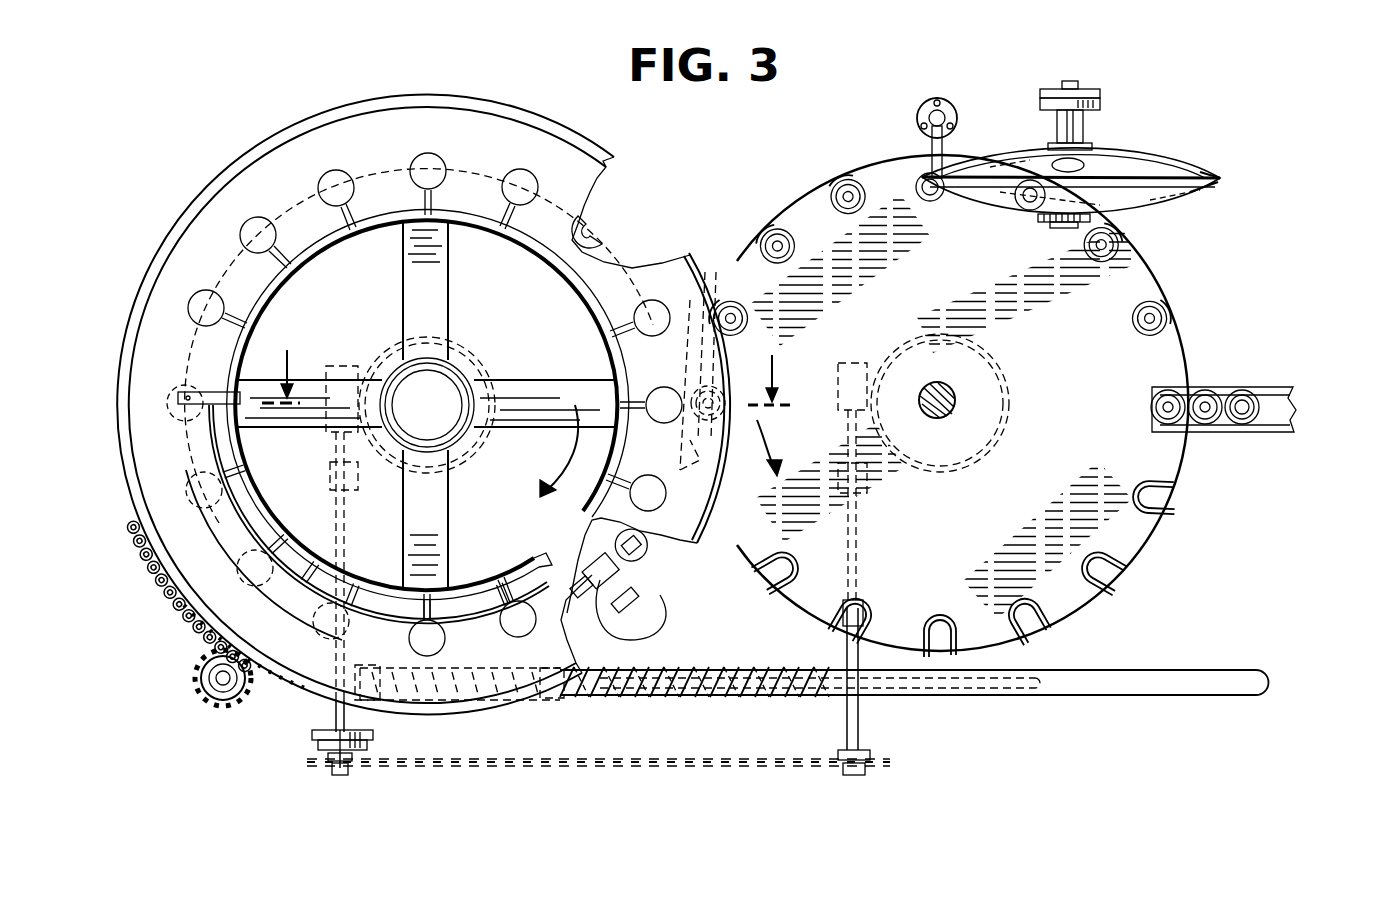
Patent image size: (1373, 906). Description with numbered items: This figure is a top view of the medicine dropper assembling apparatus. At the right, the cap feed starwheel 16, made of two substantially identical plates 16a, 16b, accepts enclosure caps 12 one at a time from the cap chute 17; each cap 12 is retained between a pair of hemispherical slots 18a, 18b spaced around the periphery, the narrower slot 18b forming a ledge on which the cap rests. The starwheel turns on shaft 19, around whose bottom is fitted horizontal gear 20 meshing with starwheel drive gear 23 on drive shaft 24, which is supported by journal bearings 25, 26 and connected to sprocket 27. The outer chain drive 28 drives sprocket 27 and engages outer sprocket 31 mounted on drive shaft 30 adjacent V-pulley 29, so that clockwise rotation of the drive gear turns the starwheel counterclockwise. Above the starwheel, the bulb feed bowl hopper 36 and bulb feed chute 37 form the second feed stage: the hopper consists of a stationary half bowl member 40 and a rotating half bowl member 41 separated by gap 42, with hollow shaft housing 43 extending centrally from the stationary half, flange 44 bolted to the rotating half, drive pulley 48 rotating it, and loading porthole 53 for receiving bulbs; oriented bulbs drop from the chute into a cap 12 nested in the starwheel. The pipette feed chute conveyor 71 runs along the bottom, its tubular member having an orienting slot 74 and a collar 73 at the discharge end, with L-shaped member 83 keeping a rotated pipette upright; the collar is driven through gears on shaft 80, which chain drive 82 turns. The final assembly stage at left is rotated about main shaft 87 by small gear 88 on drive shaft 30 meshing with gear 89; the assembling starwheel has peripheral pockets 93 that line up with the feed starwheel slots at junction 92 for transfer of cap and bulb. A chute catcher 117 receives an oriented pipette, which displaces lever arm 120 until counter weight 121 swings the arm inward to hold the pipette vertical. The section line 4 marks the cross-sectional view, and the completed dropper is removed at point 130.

The section line 4— 4 is at (528, 409).
The cap 12 is at (845, 182).
The cap feed starwheel 16 is at (1165, 362).
The starwheel plate 16a is at (1122, 555).
The starwheel plate 16b is at (1112, 590).
The cap chute 17 is at (1260, 385).
The hemispherical slot 18a is at (1180, 478).
The hemispherical slot 18b is at (1168, 504).
The starwheel shaft 19 is at (950, 395).
The horizontal gear 20 is at (1012, 412).
The starwheel drive gear 23 is at (858, 364).
The drive shaft 24 is at (858, 560).
The journal bearing 25 is at (548, 700).
The journal bearing 26 is at (880, 625).
The sprocket 27 is at (872, 762).
The outer chain drive 28 is at (718, 772).
The V-pulley 29 is at (314, 742).
The drive shaft 30 is at (338, 510).
The outer sprocket 31 is at (330, 770).
The bulb feed bowl hopper 36 is at (1205, 160).
The bulb feed chute 37 is at (950, 142).
The stationary half bowl member 40 is at (1150, 160).
The rotating half bowl member 41 is at (1200, 194).
The gap 42 is at (1225, 175).
The hollow shaft housing 43 is at (1085, 128).
The flange 44 is at (1040, 224).
The drive pulley 48 is at (1080, 92).
The loading porthole 53 is at (1085, 163).
The pipette feed chute conveyor 71 is at (1170, 693).
The collar 73 is at (375, 705).
The slot 74 is at (1020, 693).
The shaft 80 is at (223, 690).
The chain drive 82 is at (200, 618).
The L-shaped member 83 is at (678, 668).
The main shaft 87 is at (437, 395).
The small gear 88 is at (346, 366).
The gear 89 is at (495, 372).
The junction 92 is at (708, 262).
The pocket 93 is at (600, 225).
The chute catcher 117 is at (668, 608).
The lever arm 120 is at (623, 564).
The counter weight 121 is at (640, 593).
The removal point 130 is at (265, 238).